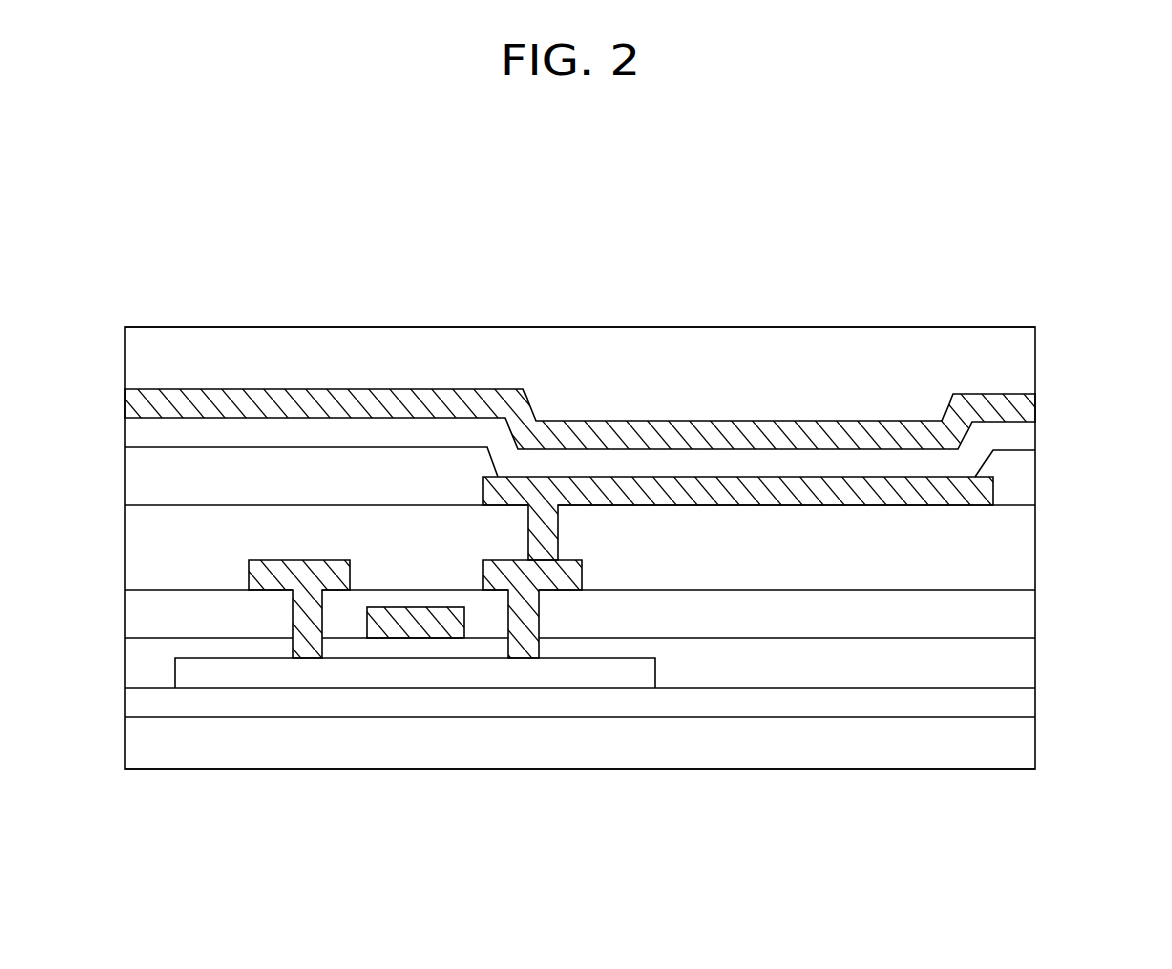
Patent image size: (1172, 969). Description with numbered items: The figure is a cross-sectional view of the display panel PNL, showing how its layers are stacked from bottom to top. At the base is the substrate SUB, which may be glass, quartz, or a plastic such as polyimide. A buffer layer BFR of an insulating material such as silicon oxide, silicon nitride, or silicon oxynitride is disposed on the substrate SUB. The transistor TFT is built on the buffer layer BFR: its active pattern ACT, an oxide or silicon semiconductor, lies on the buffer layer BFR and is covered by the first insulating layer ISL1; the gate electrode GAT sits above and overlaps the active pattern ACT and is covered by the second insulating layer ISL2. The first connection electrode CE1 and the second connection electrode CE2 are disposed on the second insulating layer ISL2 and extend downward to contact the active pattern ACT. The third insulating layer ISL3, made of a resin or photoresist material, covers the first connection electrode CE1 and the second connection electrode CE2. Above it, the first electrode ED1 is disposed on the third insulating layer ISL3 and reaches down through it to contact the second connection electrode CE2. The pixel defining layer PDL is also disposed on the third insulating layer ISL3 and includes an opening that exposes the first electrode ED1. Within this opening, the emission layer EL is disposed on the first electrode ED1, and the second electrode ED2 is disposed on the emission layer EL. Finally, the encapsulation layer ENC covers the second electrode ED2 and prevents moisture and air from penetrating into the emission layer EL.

The display panel PNL is at (1040, 250).
The encapsulation layer ENC is at (1024, 371).
The second electrode ED2 is at (1024, 408).
The emission layer EL is at (1024, 436).
The pixel defining layer PDL is at (1024, 466).
The first electrode ED1 is at (983, 489).
The third insulating layer ISL3 is at (1024, 555).
The second insulating layer ISL2 is at (1024, 616).
The first insulating layer ISL1 is at (1024, 662).
The buffer layer BFR is at (1024, 708).
The substrate SUB is at (1024, 745).
The transistor TFT is at (415, 713).
The first connection electrode CE1 is at (313, 636).
The gate electrode GAT is at (398, 638).
The active pattern ACT is at (458, 668).
The second connection electrode CE2 is at (532, 690).